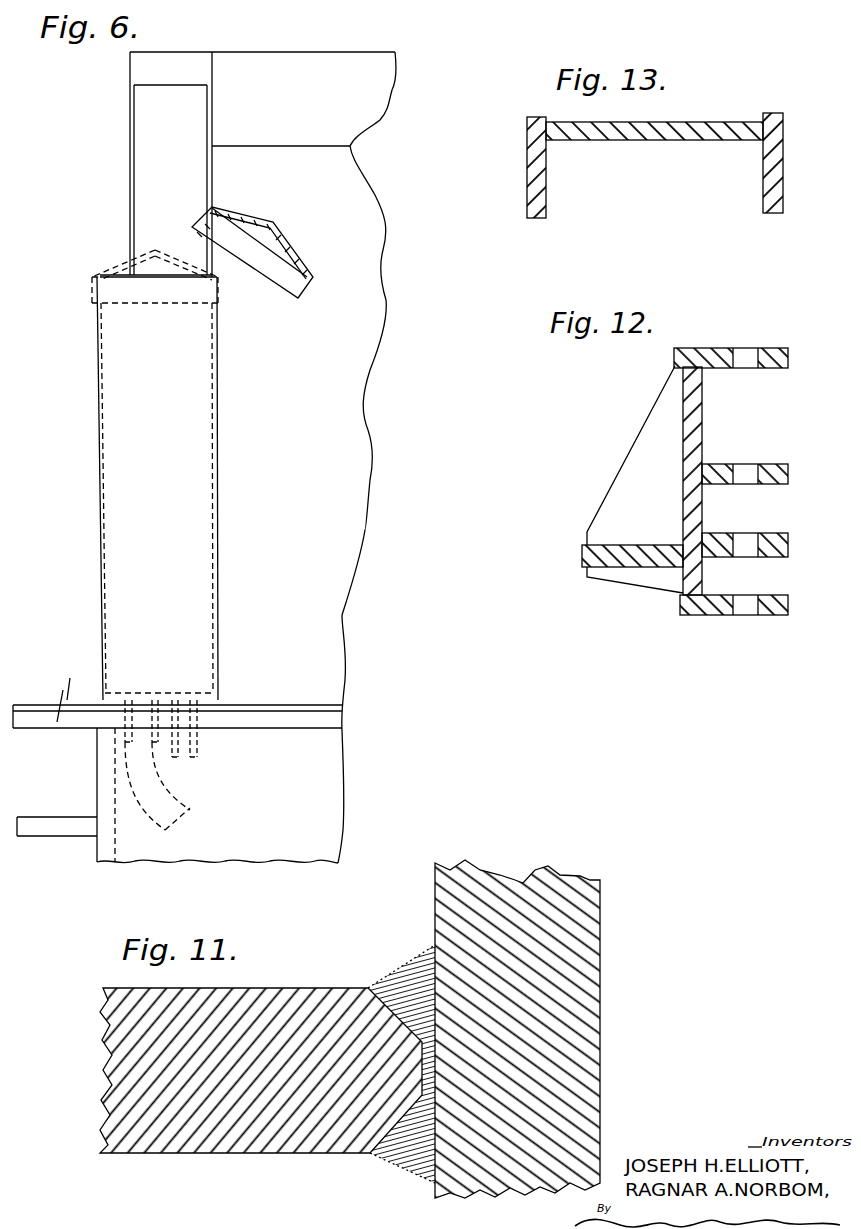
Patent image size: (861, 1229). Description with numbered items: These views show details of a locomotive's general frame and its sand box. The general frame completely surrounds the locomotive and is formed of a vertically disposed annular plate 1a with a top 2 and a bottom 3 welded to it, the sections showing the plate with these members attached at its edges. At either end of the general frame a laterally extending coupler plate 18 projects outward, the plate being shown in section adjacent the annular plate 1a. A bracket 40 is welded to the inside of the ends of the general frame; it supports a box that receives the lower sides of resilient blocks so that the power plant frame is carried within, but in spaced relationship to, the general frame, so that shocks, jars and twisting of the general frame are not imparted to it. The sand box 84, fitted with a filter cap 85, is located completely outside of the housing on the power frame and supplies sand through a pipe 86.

In FIG. 6, the vertically disposed annular plate 1a is at (97, 768).
In FIG. 13, the vertically disposed annular plate 1a is at (718, 106).
In FIG. 12, the vertically disposed annular plate 1a is at (684, 412).
In FIG. 11, the vertically disposed annular plate 1a is at (525, 880).
In FIG. 13, the top 2 is at (527, 162).
In FIG. 13, the bottom 3 is at (783, 160).
In FIG. 6, the coupler plate 18 is at (67, 805).
In FIG. 12, the coupler plate 18 is at (788, 486).
In FIG. 12, the bracket 40 is at (588, 557).
In FIG. 11, the bracket 40 is at (283, 993).
In FIG. 6, the sand box 84 is at (192, 365).
In FIG. 6, the filter cap 85 is at (283, 232).
In FIG. 6, the pipe 86 is at (192, 810).